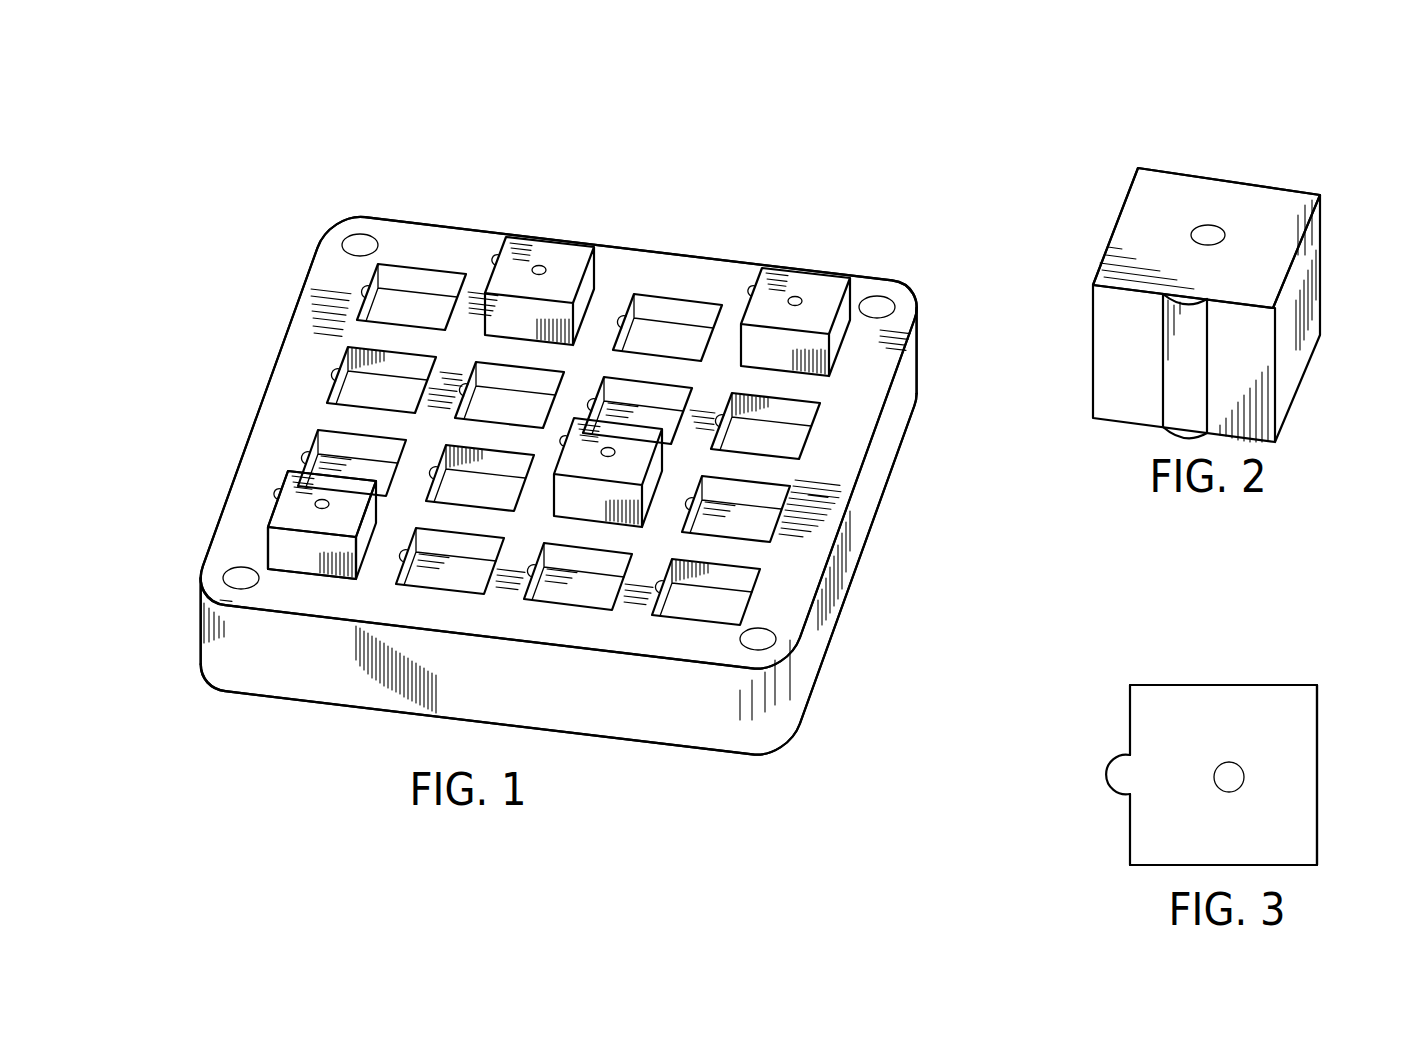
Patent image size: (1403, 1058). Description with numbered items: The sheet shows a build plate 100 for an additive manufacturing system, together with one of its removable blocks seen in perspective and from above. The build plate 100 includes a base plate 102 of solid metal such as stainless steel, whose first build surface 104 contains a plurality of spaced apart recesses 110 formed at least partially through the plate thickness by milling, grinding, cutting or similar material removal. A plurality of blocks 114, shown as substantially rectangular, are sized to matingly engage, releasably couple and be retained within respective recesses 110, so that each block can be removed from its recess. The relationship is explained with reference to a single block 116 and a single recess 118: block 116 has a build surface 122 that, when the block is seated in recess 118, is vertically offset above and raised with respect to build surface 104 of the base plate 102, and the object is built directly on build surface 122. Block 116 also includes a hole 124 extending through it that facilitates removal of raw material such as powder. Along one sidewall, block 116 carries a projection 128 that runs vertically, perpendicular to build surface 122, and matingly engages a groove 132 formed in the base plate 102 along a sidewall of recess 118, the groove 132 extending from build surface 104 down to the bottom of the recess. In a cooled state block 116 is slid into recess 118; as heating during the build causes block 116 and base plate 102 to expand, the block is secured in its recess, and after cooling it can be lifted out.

In FIG. 1, the build plate 100 is at (295, 133).
In FIG. 1, the base plate 102 is at (869, 636).
In FIG. 1, the first build surface 104 is at (822, 496).
In FIG. 1, the recesses 110 is at (748, 405).
In FIG. 1, the blocks 114 is at (557, 228).
In FIG. 1, the block 116 is at (222, 531).
In FIG. 2, the block 116 is at (1345, 148).
In FIG. 3, the block 116 is at (1322, 620).
In FIG. 1, the recess 118 is at (318, 571).
In FIG. 1, the build surface 122 is at (290, 505).
In FIG. 2, the build surface 122 is at (1148, 230).
In FIG. 3, the build surface 122 is at (1167, 705).
In FIG. 1, the hole 124 is at (320, 503).
In FIG. 2, the hole 124 is at (1203, 234).
In FIG. 3, the hole 124 is at (1228, 776).
In FIG. 2, the projection 128 is at (1174, 384).
In FIG. 3, the projection 128 is at (1126, 771).
In FIG. 1, the groove 132 is at (372, 292).